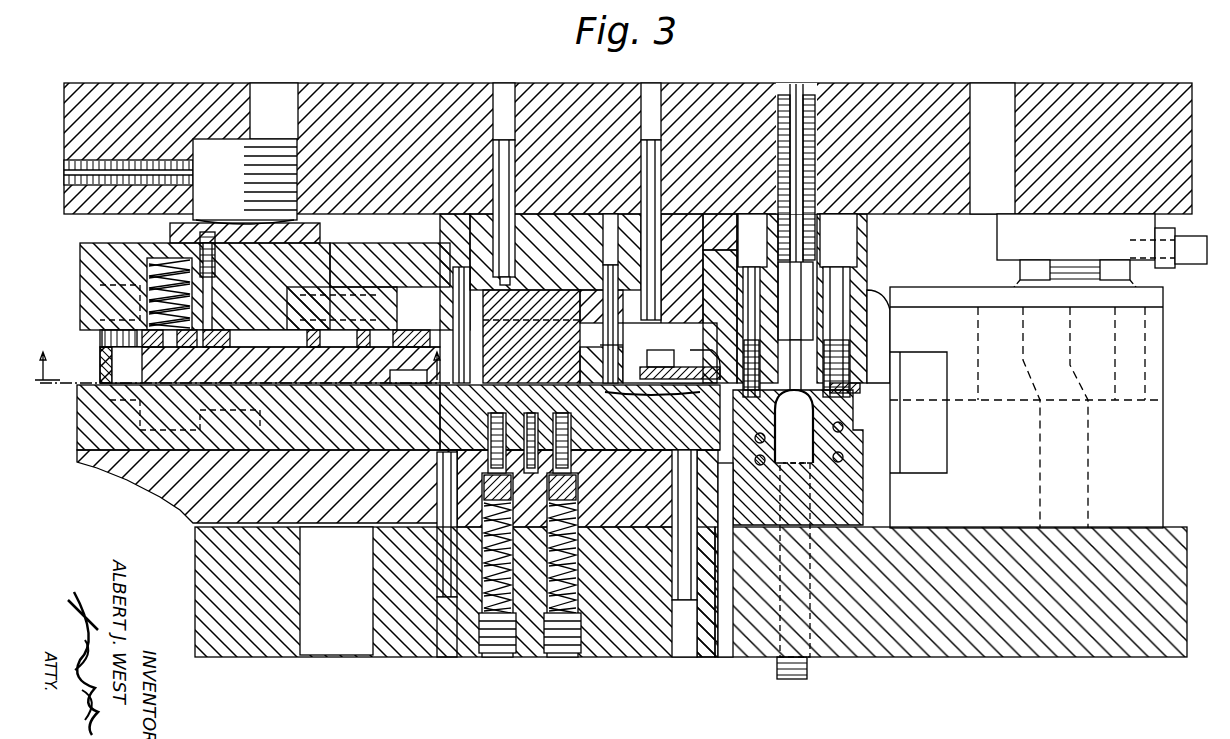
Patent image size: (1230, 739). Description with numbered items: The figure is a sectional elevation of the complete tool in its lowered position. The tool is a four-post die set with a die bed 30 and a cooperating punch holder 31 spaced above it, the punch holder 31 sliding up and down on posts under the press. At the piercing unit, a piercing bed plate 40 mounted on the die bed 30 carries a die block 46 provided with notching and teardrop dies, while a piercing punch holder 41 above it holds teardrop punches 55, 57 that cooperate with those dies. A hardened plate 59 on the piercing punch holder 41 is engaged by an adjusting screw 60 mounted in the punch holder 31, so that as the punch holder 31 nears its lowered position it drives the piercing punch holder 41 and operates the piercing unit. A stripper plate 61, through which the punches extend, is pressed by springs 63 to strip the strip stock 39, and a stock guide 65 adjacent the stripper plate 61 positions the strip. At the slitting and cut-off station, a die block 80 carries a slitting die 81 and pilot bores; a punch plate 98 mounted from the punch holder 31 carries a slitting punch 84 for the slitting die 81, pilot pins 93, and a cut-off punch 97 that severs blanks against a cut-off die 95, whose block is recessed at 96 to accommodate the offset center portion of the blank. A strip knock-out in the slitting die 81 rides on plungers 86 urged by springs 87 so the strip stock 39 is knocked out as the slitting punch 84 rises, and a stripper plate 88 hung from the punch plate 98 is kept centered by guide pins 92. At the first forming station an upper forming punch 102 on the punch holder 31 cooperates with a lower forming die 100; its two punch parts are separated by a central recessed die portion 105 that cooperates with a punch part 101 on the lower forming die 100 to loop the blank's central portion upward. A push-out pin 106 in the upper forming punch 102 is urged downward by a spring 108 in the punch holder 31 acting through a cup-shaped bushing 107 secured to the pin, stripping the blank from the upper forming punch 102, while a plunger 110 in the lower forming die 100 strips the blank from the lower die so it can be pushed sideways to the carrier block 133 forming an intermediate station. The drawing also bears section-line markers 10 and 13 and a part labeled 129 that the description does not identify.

The section line 10- 10 is at (242, 355).
The section line 13- 13 is at (540, 200).
The die bed 30 is at (936, 656).
The punch holder 31 is at (910, 96).
The strip stock 39 is at (72, 392).
The piercing bed plate 40 is at (176, 497).
The piercing punch holder 41 is at (85, 283).
The die block 46 is at (100, 462).
The teardrop punch 55 is at (307, 340).
The teardrop punch 57 is at (357, 340).
The hardened plate 59 is at (200, 233).
The adjusting screw 60 is at (262, 148).
The stripper plate 61 is at (150, 374).
The springs 63 is at (150, 268).
The stock guide 65 is at (100, 342).
The die block 80 is at (580, 521).
The slitting die 81 is at (503, 404).
The slitting punch 84 is at (658, 353).
The plungers 86 is at (530, 535).
The springs 87 is at (505, 597).
The stripper plate 88 is at (680, 355).
The guide pins 92 is at (455, 245).
The pilot pins 93 is at (623, 477).
The cut-off die 95 is at (730, 428).
The recess 96 is at (665, 394).
The cut-off punch 97 is at (705, 362).
The punch plate 98 is at (448, 218).
The lower forming die 100 is at (866, 494).
The punch part 101 is at (835, 416).
The upper forming punch 102 is at (872, 350).
The central recessed die portion 105 is at (845, 394).
The push-out pin 106 is at (800, 272).
The cup-shaped bushing 107 is at (830, 233).
The spring 108 is at (822, 126).
The plunger 110 is at (808, 668).
The adjusting block 129 is at (1078, 280).
The carrier block 133 is at (866, 296).